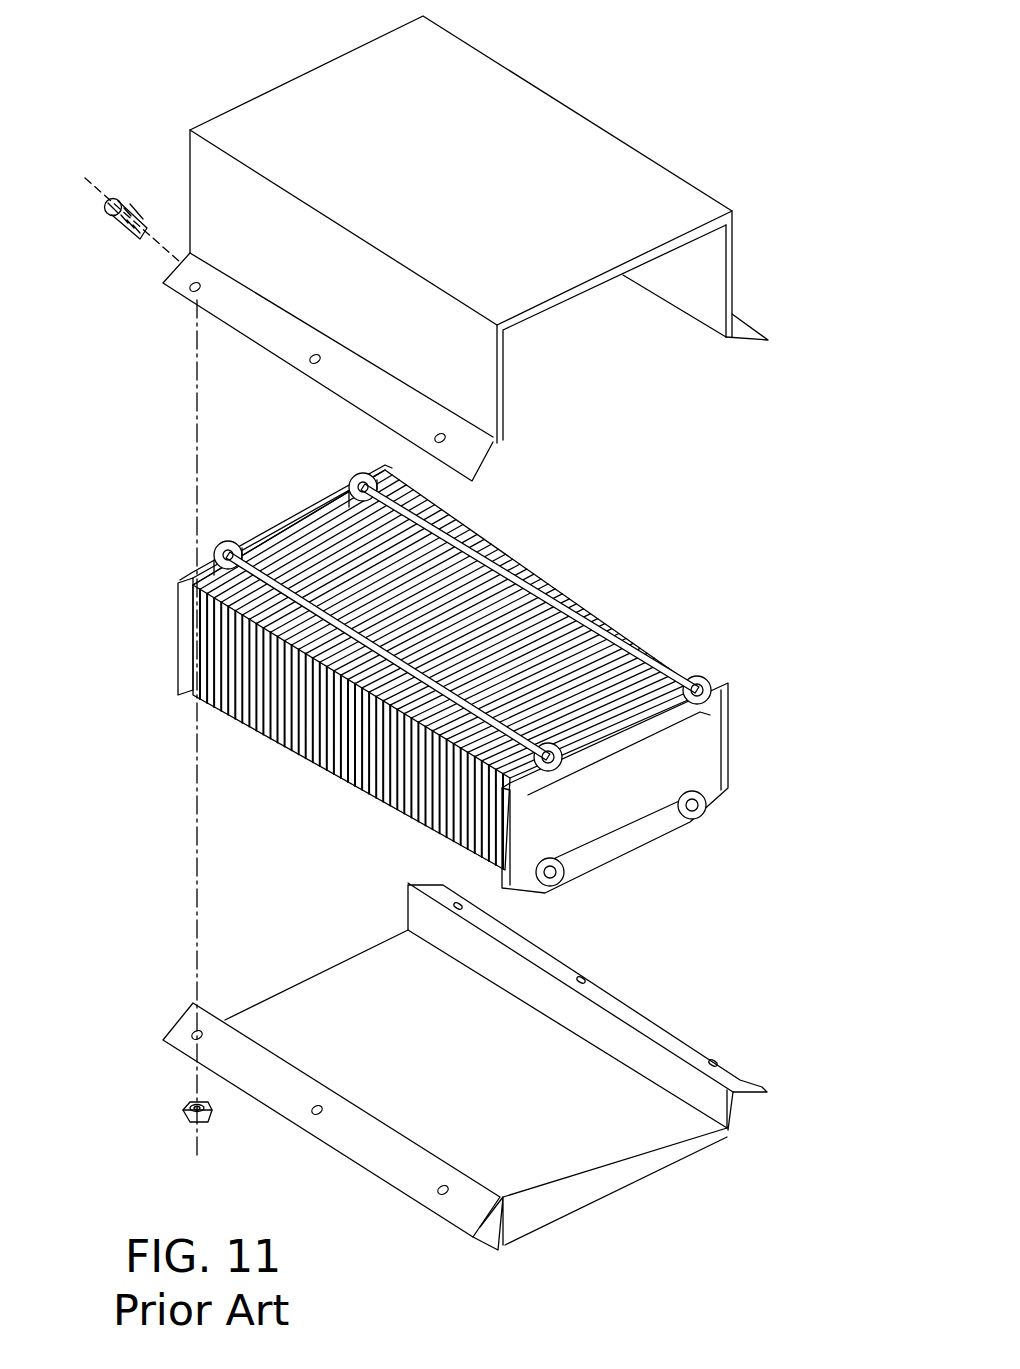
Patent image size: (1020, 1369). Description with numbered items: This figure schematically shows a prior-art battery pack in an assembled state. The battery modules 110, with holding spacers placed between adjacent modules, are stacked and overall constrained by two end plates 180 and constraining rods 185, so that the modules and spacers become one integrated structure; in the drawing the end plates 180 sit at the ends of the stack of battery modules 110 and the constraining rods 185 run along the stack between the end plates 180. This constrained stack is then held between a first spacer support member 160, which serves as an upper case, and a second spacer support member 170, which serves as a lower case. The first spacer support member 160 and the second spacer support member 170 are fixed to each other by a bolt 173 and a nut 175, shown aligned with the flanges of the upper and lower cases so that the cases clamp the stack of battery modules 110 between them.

The battery module 110 is at (713, 676).
The first spacer support member 160 is at (332, 102).
The second spacer support member 170 is at (600, 1168).
The bolt 173 is at (115, 199).
The nut 175 is at (183, 1110).
The end plate 180 is at (283, 535).
The constraining rod 185 is at (343, 520).